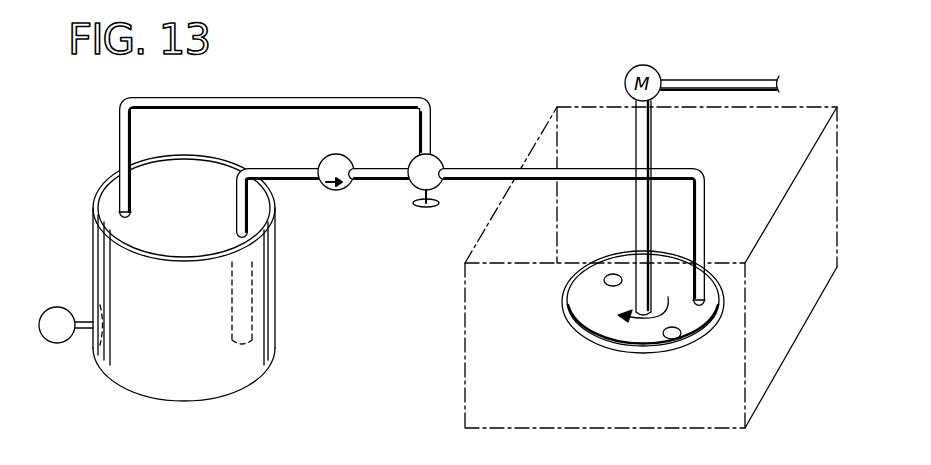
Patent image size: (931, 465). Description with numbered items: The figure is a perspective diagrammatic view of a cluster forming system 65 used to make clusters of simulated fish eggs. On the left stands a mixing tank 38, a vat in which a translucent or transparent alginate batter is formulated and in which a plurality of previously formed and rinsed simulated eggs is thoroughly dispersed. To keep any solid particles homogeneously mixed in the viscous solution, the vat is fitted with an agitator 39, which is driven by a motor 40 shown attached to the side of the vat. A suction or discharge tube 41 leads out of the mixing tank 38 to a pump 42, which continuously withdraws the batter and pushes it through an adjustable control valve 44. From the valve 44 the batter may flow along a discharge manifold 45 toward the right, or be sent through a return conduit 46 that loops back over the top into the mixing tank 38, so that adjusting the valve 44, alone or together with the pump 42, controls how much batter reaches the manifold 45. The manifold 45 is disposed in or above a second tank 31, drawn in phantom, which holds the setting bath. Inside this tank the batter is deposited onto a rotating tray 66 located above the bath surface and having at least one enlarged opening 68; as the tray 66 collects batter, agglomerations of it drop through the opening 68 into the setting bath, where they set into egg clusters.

The second tank 31 is at (465, 335).
The mixing tank 38 is at (266, 295).
The agitator 39 is at (97, 362).
The motor 40 is at (59, 308).
The suction or discharge tube 41 is at (288, 170).
The pump 42 is at (349, 159).
The adjustable control valve 44 is at (440, 159).
The discharge manifold 45 is at (591, 168).
The return conduit 46 is at (310, 100).
The cluster forming system 65 is at (540, 104).
The rotating tray 66 is at (727, 316).
The enlarged opening 68 is at (665, 336).